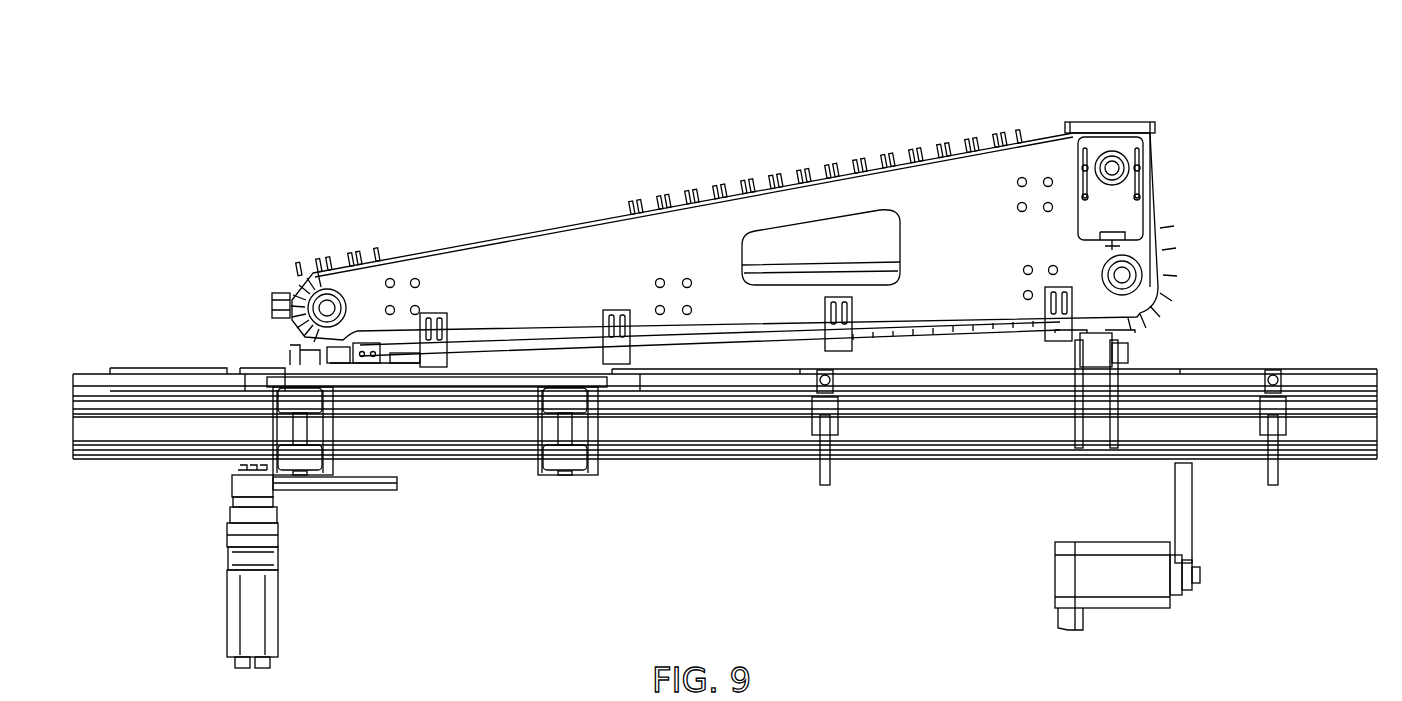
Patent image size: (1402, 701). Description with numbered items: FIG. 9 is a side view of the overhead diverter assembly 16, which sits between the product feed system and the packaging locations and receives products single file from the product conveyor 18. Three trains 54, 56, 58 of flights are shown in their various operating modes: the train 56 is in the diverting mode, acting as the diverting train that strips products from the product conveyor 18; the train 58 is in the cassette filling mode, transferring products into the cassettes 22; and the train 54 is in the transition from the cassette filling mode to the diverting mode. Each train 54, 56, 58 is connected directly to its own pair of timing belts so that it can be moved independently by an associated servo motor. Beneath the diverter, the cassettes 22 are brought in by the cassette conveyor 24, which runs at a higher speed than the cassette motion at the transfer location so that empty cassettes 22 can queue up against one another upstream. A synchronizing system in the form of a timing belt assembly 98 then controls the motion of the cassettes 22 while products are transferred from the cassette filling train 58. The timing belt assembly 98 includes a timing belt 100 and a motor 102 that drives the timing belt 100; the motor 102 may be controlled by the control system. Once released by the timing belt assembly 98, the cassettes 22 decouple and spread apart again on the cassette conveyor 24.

The overhead diverter assembly 16 is at (512, 176).
The product conveyor 18 is at (1068, 413).
The cassettes 22 is at (168, 368).
The cassette conveyor 24 is at (1328, 405).
The train of flights 54 is at (783, 137).
The train of flights 56 is at (1204, 265).
The train of flights 58 is at (264, 247).
The timing belt assembly 98 is at (541, 488).
The timing belt 100 is at (476, 382).
The motor 102 is at (283, 632).